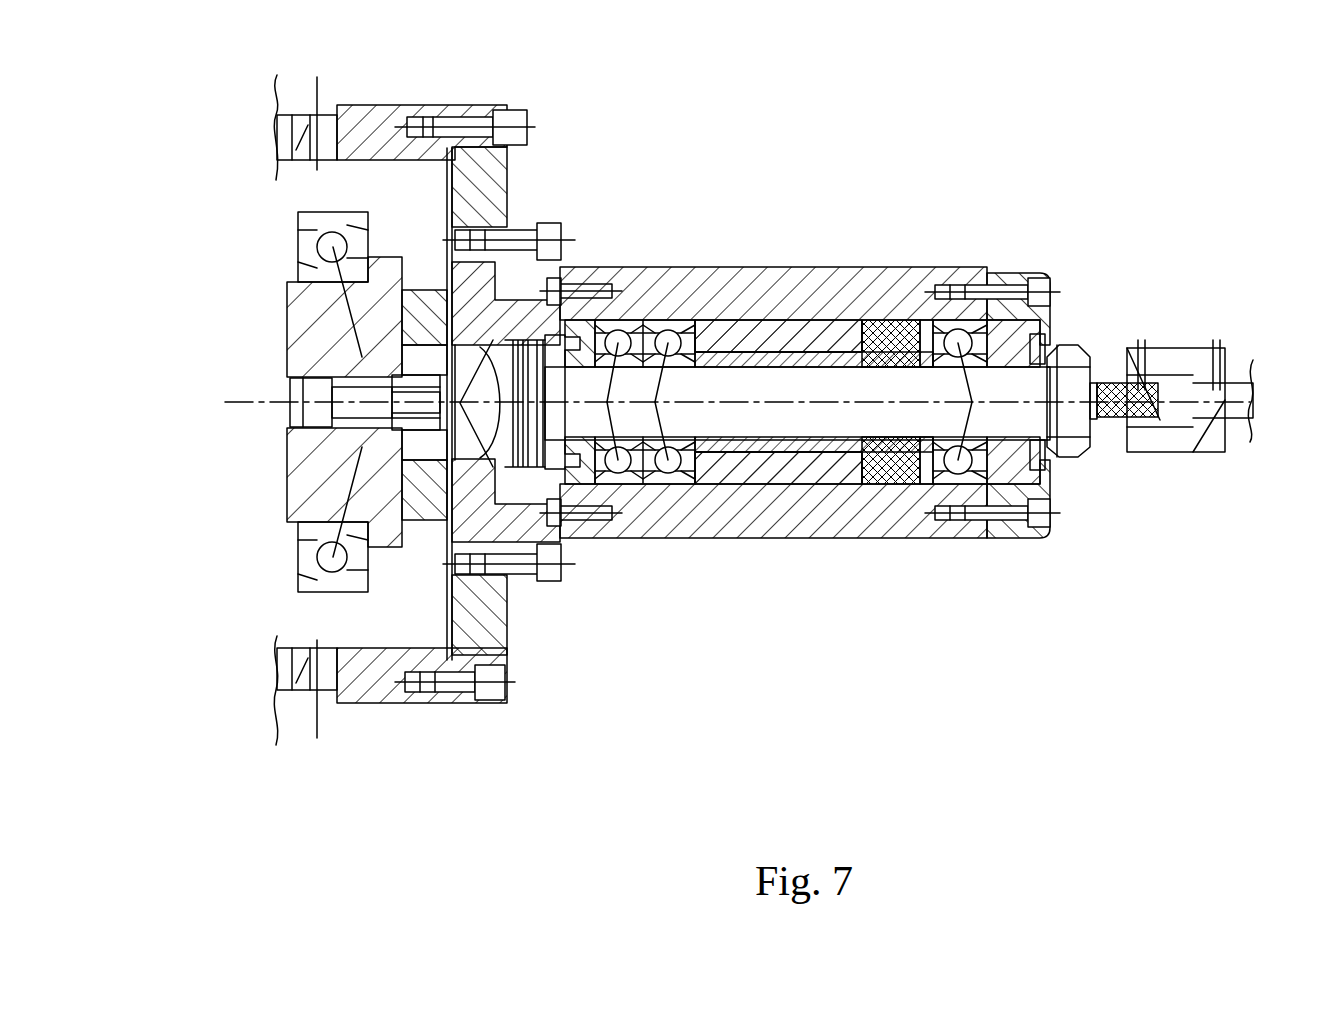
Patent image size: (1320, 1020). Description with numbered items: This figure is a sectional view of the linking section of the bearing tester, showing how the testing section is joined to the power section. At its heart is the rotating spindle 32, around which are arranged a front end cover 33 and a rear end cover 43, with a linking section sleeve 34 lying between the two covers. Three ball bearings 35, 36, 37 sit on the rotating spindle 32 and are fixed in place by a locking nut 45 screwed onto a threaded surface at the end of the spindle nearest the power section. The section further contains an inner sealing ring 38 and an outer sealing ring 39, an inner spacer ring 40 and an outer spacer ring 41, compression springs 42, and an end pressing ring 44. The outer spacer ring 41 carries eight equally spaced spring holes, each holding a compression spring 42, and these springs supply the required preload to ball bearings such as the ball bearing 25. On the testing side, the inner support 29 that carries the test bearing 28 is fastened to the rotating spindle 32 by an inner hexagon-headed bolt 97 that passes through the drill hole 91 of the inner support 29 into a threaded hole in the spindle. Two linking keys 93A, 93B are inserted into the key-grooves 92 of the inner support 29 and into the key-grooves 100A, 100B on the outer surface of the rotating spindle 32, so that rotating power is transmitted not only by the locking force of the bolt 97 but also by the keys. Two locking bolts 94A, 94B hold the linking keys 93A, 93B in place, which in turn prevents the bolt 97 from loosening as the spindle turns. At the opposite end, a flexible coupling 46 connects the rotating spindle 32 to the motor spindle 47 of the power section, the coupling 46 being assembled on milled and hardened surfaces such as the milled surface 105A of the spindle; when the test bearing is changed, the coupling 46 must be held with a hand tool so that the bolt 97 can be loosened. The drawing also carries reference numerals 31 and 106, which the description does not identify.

The ball bearing 25 is at (370, 127).
The test bearing 28 is at (308, 225).
The inner support 29 is at (308, 343).
The plate 31 is at (492, 200).
The rotating spindle 32 is at (780, 420).
The front end cover 33 is at (520, 560).
The linking section sleeve 34 is at (857, 513).
The ball bearing 35 is at (630, 482).
The ball bearing 36 is at (770, 275).
The ball bearing 37 is at (972, 480).
The inner sealing ring 38 is at (707, 267).
The outer sealing ring 39 is at (590, 490).
The inner spacer ring 40 is at (907, 268).
The outer spacer ring 41 is at (935, 495).
The compression spring 42 is at (887, 480).
The rear end cover 43 is at (1010, 270).
The end pressing ring 44 is at (1048, 460).
The locking nut 45 is at (1077, 355).
The flexible coupling 46 is at (1183, 443).
The motor spindle 47 is at (1235, 410).
The drill hole 91 is at (288, 397).
The key-groove 92 is at (407, 437).
The linking key 93A is at (425, 340).
The linking key 93B is at (420, 512).
The locking bolt 94A is at (560, 250).
The locking bolt 94B is at (548, 608).
The bolt 97 is at (395, 400).
The key-groove 100A is at (582, 275).
The key-groove 100B is at (548, 540).
The milled and hardened surface 105A is at (1127, 425).
The shaft stub 106 is at (1085, 365).